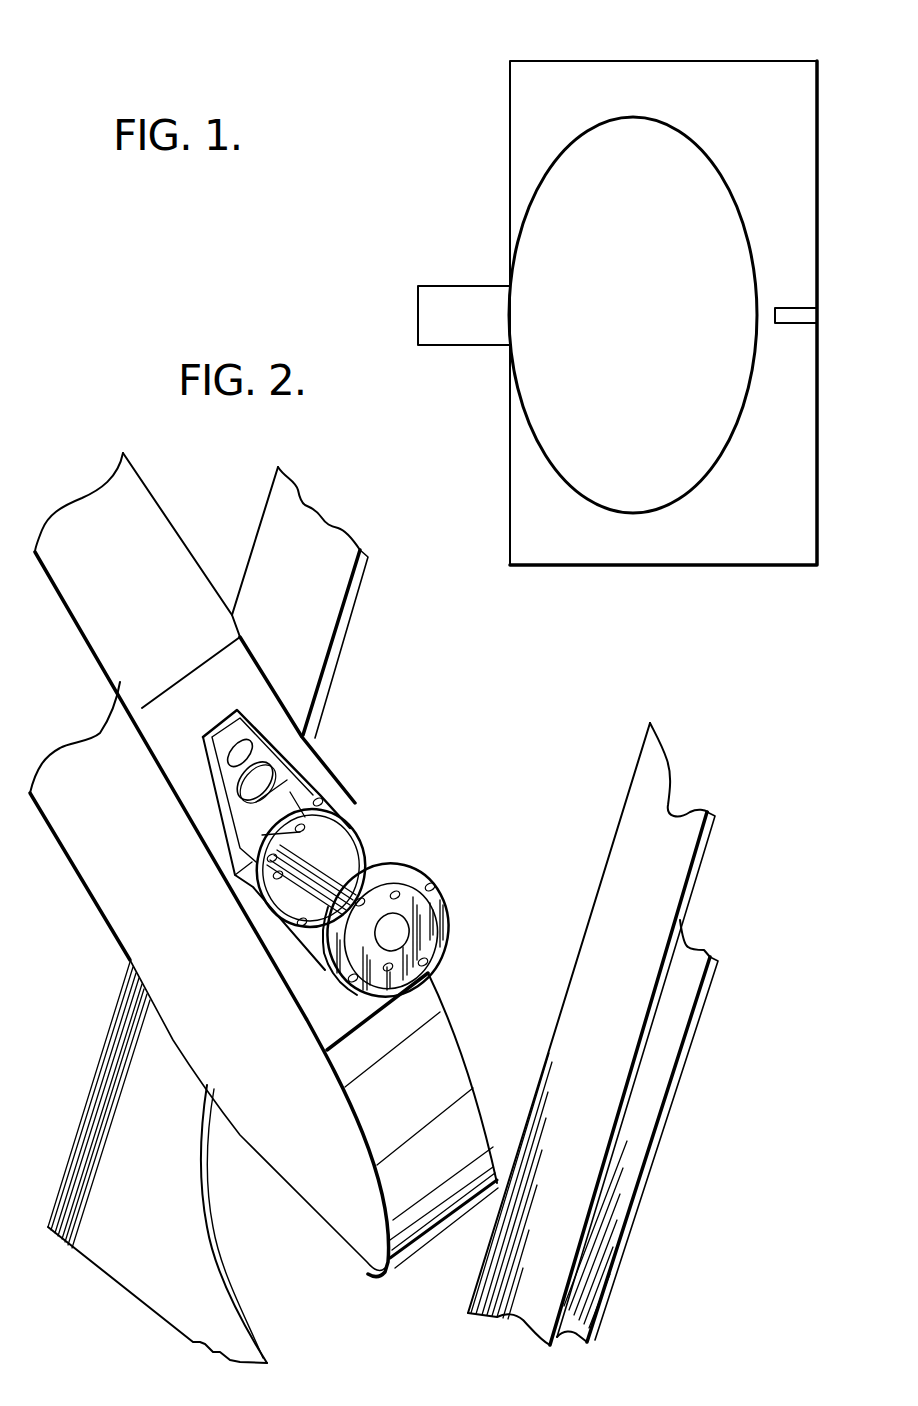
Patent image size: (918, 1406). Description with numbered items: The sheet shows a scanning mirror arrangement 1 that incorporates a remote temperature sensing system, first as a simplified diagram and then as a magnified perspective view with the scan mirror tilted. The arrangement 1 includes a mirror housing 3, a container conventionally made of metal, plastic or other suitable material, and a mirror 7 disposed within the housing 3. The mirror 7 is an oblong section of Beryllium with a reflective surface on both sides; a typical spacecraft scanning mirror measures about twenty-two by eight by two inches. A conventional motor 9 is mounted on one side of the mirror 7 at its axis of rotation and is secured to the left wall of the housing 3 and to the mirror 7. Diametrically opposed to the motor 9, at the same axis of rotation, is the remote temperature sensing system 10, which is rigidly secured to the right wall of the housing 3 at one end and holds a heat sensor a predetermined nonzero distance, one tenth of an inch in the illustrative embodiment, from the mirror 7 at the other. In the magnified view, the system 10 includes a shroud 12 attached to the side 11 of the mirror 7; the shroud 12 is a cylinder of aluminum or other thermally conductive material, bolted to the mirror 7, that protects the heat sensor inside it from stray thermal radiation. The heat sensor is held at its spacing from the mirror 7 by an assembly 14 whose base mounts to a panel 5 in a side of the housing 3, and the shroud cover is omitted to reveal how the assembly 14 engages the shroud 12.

In FIG. 1, the arrangement 1 is at (807, 49).
In FIG. 1, the mirror housing 3 is at (510, 61).
In FIG. 2, the mirror housing 3 is at (460, 906).
In FIG. 2, the side panel 5 is at (302, 604).
In FIG. 1, the mirror 7 is at (525, 220).
In FIG. 2, the mirror 7 is at (127, 824).
In FIG. 1, the motor 9 is at (450, 286).
In FIG. 1, the remote temperature sensing system 10 is at (781, 325).
In FIG. 2, the remote temperature sensing system 10 is at (416, 914).
In FIG. 2, the side 11 is at (164, 626).
In FIG. 2, the shroud 12 is at (350, 820).
In FIG. 2, the assembly 14 is at (365, 850).